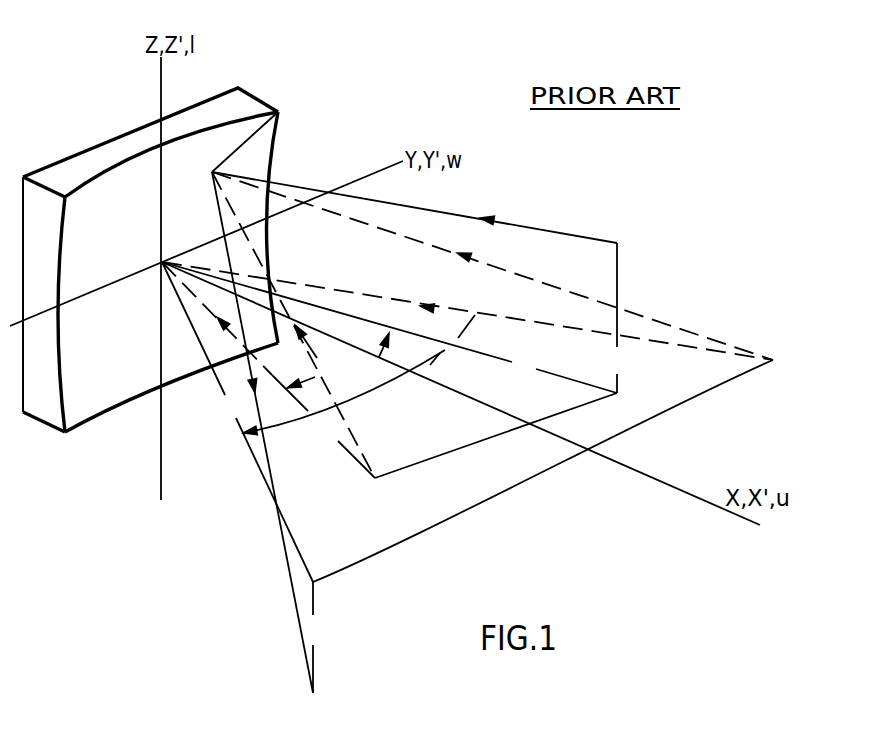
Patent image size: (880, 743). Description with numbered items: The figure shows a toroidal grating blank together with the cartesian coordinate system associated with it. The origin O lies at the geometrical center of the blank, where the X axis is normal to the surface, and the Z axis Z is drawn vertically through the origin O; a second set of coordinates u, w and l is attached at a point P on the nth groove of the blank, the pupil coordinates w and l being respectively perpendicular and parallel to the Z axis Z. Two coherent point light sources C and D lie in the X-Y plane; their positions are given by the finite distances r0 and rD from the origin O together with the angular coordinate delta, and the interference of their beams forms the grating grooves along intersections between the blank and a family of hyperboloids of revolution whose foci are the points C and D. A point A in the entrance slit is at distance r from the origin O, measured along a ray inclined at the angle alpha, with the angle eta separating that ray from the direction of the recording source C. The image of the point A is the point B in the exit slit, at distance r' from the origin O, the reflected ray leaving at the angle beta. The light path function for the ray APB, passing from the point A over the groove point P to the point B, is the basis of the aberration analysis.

The origin O is at (150, 254).
The point on the nth groove P is at (278, 112).
The point in the entrance slit A is at (425, 282).
The Z axis Z is at (619, 371).
The coherent point light source D is at (414, 340).
The entrance slit distance r is at (389, 327).
The distance to recording source C r0 is at (467, 311).
The coherent point light source C is at (503, 377).
The distance to recording source D rD is at (268, 370).
The exit slit distance r' is at (237, 422).
The image point in the exit slit B is at (271, 446).
The angle of incidence alpha is at (393, 348).
The angular coordinate eta is at (452, 340).
The angular position of recording source delta is at (310, 357).
The angle of diffraction beta is at (344, 392).